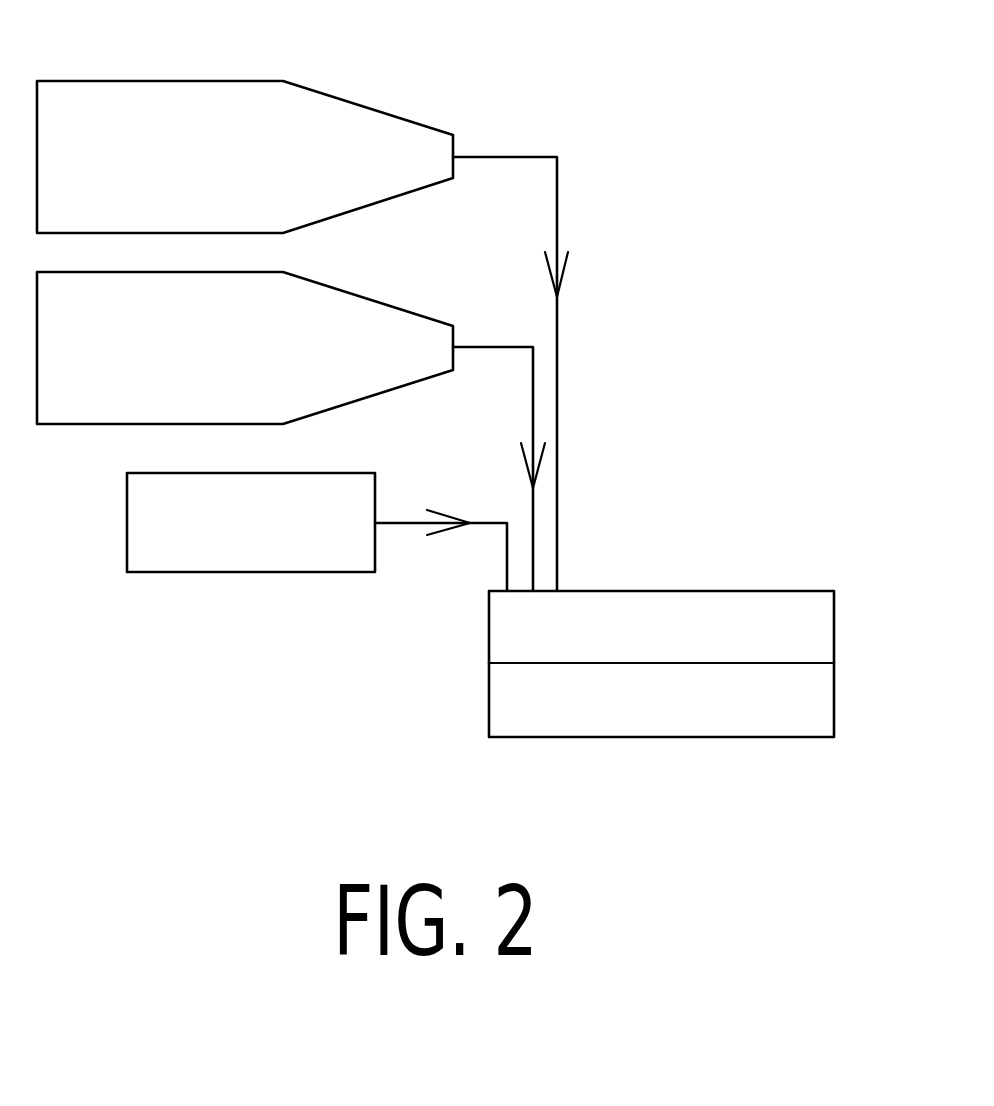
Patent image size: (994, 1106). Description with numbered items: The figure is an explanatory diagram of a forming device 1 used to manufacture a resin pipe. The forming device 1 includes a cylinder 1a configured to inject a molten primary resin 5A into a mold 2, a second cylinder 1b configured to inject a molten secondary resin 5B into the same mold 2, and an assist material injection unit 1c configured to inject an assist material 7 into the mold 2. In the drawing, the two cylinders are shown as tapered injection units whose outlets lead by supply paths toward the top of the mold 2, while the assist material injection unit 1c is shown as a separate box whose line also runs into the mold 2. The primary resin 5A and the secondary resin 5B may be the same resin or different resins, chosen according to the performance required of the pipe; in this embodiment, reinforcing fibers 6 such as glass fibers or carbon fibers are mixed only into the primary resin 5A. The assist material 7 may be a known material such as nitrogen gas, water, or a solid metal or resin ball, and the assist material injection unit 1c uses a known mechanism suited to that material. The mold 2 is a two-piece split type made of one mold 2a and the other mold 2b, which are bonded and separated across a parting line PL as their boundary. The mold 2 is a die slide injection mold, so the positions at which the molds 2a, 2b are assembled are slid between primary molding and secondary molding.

The forming device 1 is at (293, 339).
The cylinder 1a is at (377, 188).
The cylinder 1b is at (377, 378).
The assist material injection unit 1c is at (247, 552).
The mold 2 is at (626, 636).
The one mold 2a is at (753, 612).
The other mold 2b is at (753, 718).
The primary resin 5A is at (573, 374).
The secondary resin 5B is at (533, 393).
The reinforcing fibers 6 is at (557, 200).
The assist material 7 is at (415, 527).
The parting line PL is at (528, 664).